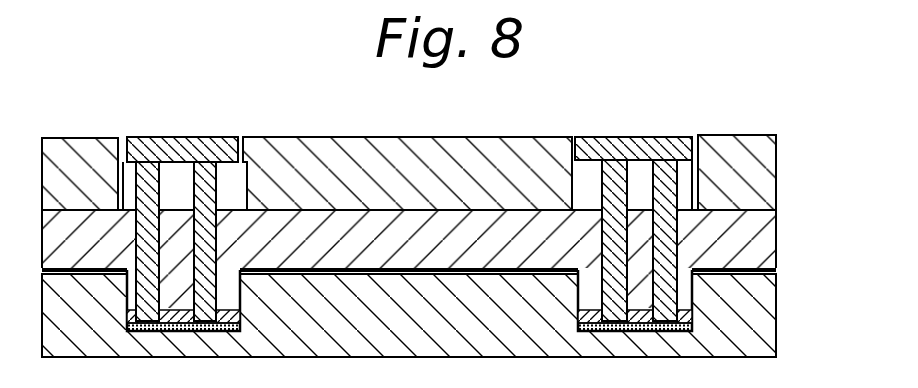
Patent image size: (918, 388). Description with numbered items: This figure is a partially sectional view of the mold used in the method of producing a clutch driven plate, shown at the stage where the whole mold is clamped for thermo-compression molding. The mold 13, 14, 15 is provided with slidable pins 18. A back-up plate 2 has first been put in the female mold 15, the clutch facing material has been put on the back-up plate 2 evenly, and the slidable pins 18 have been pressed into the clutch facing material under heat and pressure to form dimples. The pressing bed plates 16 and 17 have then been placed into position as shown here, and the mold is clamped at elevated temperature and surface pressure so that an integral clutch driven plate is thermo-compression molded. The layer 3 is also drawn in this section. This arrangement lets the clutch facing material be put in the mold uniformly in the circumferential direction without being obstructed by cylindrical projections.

The back-up plate 2 is at (687, 333).
The adhesive layer 3 is at (692, 329).
The mold 13 is at (683, 140).
The mold 14 is at (750, 236).
The female mold 15 is at (752, 284).
The pressing bed plate 16 is at (748, 181).
The pressing bed plate 17 is at (462, 143).
The slidable pins 18 is at (150, 232).